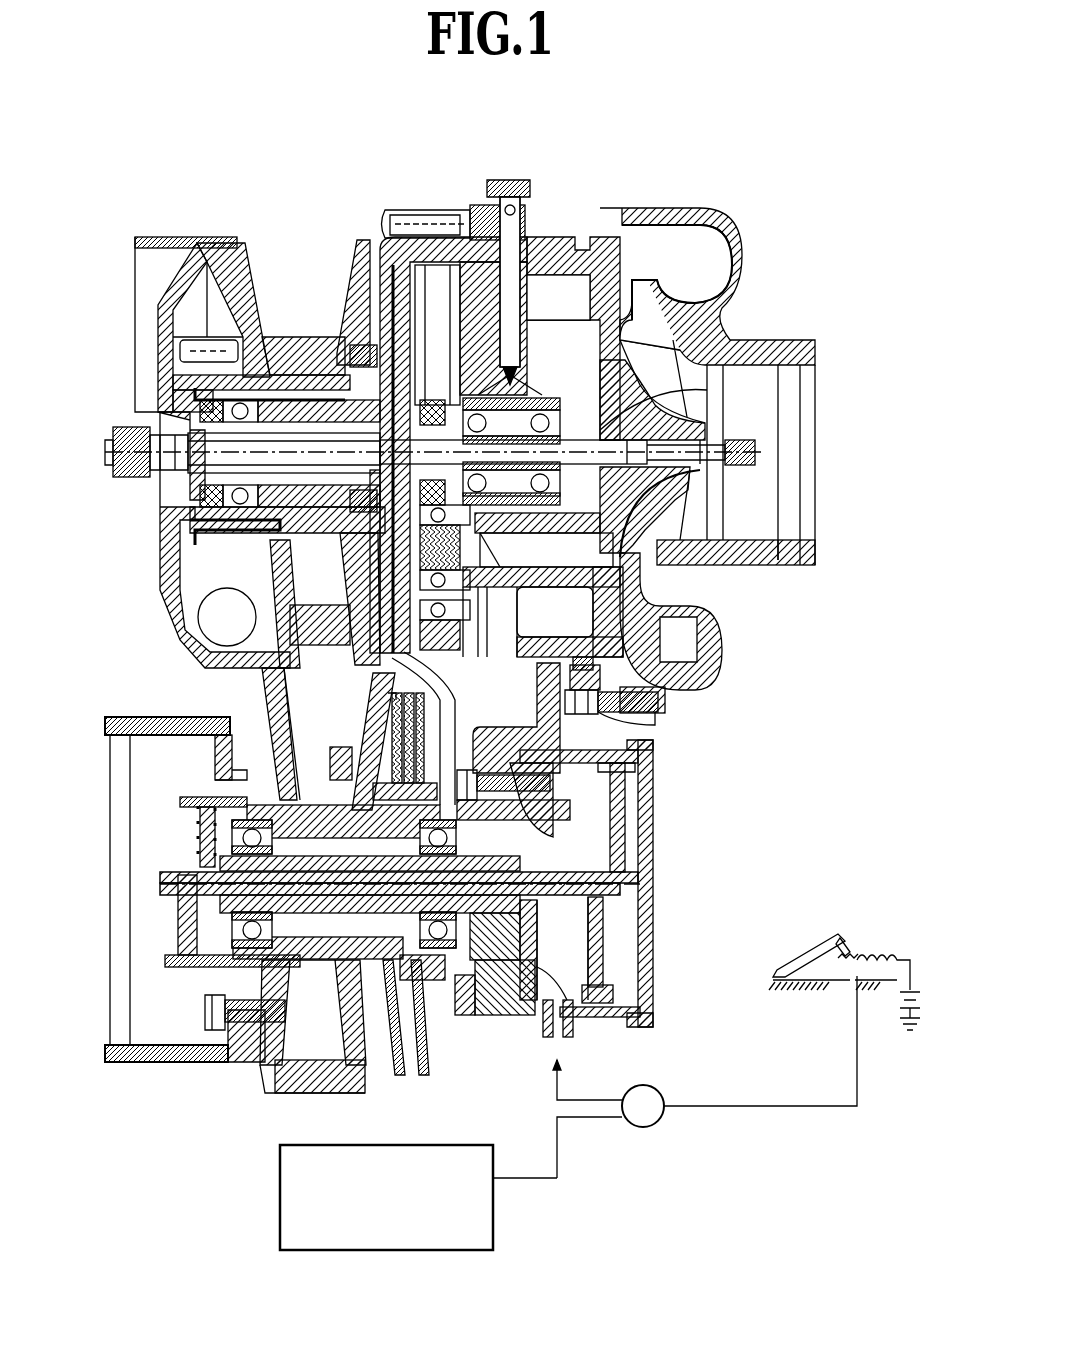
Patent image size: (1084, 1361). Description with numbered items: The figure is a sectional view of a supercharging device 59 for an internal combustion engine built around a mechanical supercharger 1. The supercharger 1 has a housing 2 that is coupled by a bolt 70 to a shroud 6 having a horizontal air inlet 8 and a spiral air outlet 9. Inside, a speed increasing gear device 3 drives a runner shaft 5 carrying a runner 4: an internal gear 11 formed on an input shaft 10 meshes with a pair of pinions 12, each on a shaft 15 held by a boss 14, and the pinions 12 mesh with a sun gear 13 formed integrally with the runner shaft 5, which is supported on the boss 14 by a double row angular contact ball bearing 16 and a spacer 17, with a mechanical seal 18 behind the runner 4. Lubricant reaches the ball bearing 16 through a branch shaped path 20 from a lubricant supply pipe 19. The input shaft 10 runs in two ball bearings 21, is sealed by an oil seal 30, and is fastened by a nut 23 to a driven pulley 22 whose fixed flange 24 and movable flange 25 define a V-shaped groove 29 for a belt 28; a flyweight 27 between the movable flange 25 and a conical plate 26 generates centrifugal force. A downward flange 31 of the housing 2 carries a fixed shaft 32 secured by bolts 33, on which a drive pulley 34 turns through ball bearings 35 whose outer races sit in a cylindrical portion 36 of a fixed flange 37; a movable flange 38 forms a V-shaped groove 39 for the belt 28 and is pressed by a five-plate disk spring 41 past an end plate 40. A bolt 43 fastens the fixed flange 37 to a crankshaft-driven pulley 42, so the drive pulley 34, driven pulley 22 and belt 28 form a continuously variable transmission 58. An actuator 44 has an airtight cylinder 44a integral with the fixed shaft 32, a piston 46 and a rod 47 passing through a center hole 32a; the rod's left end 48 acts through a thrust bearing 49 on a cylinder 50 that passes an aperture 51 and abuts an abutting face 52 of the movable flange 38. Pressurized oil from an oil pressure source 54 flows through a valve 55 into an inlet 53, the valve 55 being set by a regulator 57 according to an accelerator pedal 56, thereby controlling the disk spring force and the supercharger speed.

The mechanical supercharger 1 is at (760, 238).
The housing 2 is at (565, 232).
The speed increasing gear device 3 is at (452, 660).
The runner 4 is at (652, 446).
The runner shaft 5 is at (671, 591).
The shroud 6 is at (710, 225).
The air inlet 8 is at (815, 400).
The air outlet 9 is at (715, 262).
The input shaft 10 is at (318, 474).
The internal gear 11 is at (437, 275).
The pinions 12 is at (541, 612).
The sun gear 13 is at (489, 449).
The boss 14 is at (577, 582).
The shaft 15 is at (535, 582).
The double row angular contact ball bearing 16 is at (565, 410).
The spacer 17 is at (544, 541).
The mechanical seal 18 is at (660, 420).
The lubricant supply pipe 19 is at (430, 215).
The branch shaped path 20 is at (520, 380).
The ball bearings 21 is at (250, 417).
The driven pulley 22 is at (218, 232).
The nut 23 is at (135, 480).
The fixed flange 24 is at (355, 280).
The movable flange 25 is at (240, 272).
The conical plate 26 is at (177, 285).
The flyweight 27 is at (218, 620).
The belt 28 is at (303, 342).
The V-shaped groove 29 is at (280, 335).
The oil seal 30 is at (163, 530).
The flange 31 is at (548, 748).
The fixed shaft 32 is at (528, 872).
The center hole 32a is at (510, 1000).
The bolts 33 is at (470, 1010).
The drive pulley 34 is at (265, 1078).
The ball bearings 35 is at (448, 725).
The cylindrical portion 36 is at (320, 790).
The fixed flange 37 is at (268, 700).
The movable flange 38 is at (365, 740).
The V-shaped groove 39 is at (285, 702).
The end plate 40 is at (440, 1000).
The disk spring 41 is at (412, 1055).
The pulley 42 is at (160, 1063).
The bolt 43 is at (205, 1012).
The actuator 44 is at (672, 793).
The airtight cylinder 44a is at (585, 780).
The piston 46 is at (606, 925).
The rod 47 is at (562, 948).
The left end 48 is at (165, 885).
The thrust bearing 49 is at (200, 845).
The cylinder 50 is at (200, 965).
The aperture 51 is at (280, 797).
The abutting face 52 is at (313, 1026).
The inlet 53 is at (575, 1030).
The oil pressure source 54 is at (440, 1252).
The valve 55 is at (640, 1127).
The accelerator pedal 56 is at (835, 938).
The regulator 57 is at (860, 952).
The continuously variable transmission 58 is at (140, 230).
The supercharging device 59 is at (750, 1122).
The bolt 70 is at (645, 712).